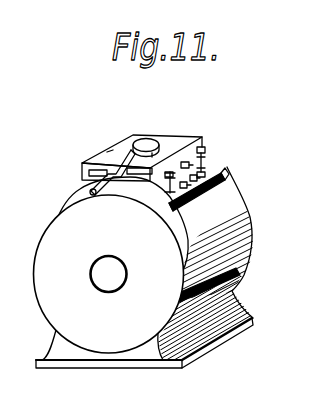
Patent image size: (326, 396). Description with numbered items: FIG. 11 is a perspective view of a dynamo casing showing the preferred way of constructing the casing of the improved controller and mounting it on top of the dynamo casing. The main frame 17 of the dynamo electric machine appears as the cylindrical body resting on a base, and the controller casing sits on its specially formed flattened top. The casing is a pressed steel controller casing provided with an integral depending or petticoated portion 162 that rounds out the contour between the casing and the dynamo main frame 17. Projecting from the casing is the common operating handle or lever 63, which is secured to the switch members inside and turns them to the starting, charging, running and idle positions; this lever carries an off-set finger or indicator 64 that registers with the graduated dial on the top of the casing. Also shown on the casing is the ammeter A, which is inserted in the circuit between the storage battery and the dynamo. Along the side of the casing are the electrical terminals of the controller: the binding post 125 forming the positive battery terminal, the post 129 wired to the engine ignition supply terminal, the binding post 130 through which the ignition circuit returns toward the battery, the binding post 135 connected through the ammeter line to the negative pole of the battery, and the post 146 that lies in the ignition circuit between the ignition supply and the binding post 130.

The main frame 17 is at (126, 274).
The operating handle or lever 63 is at (89, 186).
The off-set finger or indicator 64 is at (108, 160).
The ammeter A is at (145, 139).
The binding post 125 is at (180, 199).
The post 129 is at (222, 173).
The binding post 130 is at (225, 176).
The binding post 135 is at (204, 147).
The post 146 is at (185, 162).
The integral depending or petticoated portion 162 is at (185, 203).